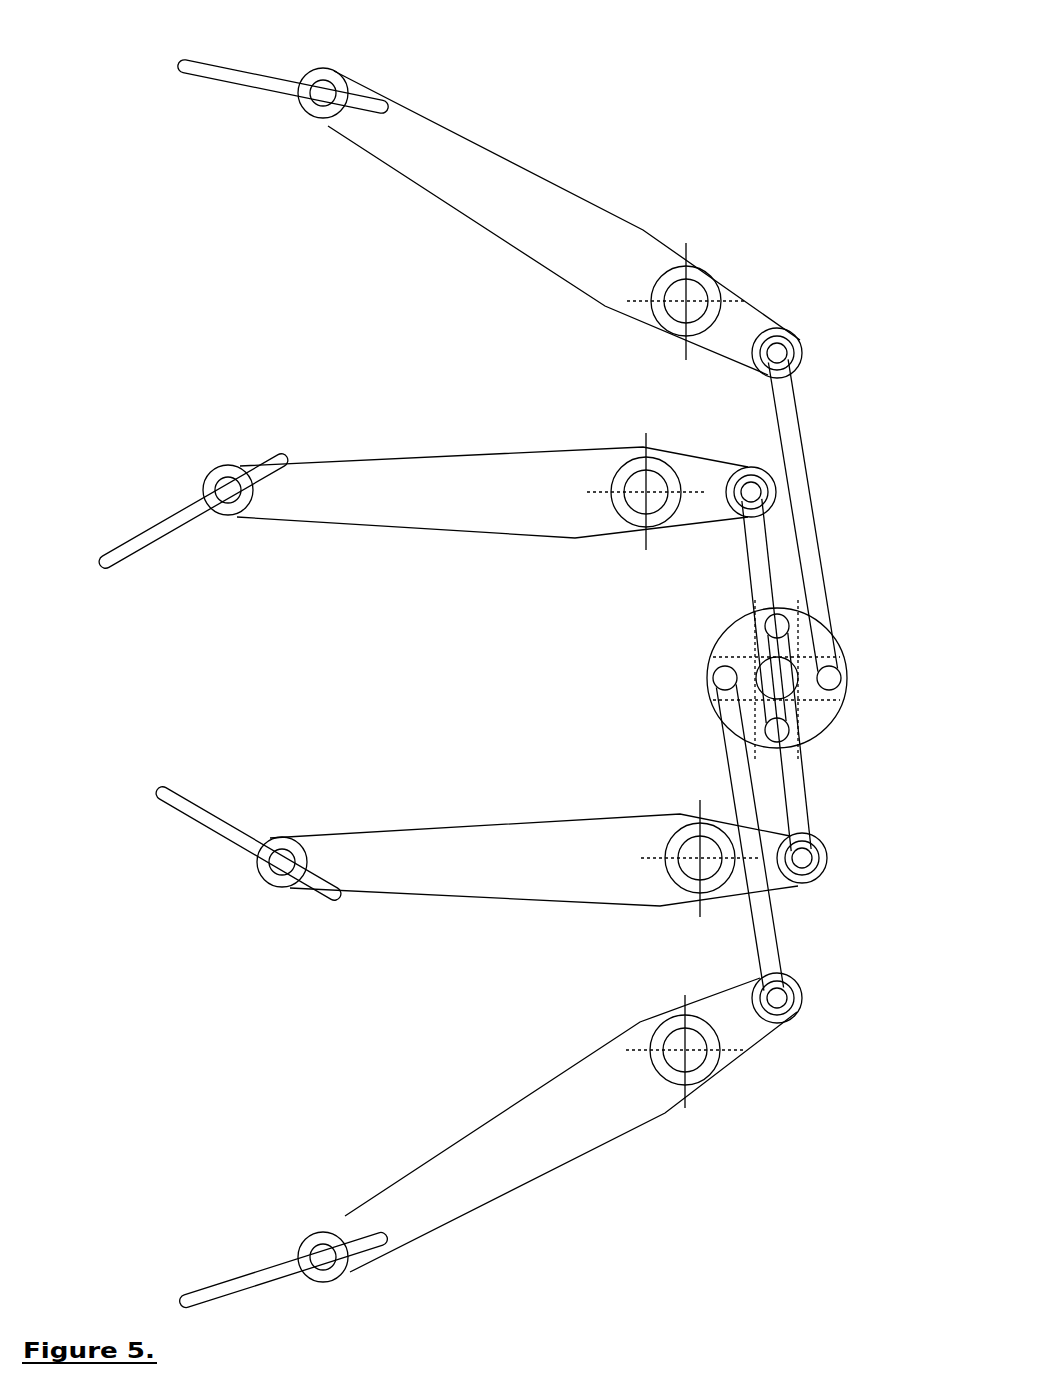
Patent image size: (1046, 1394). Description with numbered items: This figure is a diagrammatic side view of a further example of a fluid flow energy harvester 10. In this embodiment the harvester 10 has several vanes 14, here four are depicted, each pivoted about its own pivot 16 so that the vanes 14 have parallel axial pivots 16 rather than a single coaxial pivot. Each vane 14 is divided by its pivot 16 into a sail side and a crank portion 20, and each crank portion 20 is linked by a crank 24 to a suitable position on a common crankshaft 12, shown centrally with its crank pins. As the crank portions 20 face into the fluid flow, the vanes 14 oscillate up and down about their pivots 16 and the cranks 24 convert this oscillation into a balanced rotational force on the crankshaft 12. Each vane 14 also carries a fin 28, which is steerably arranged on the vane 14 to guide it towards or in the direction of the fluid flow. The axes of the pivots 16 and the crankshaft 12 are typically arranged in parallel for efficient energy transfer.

The fluid flow energy harvester 10 is at (840, 145).
The crankshaft 12 is at (820, 712).
The vane 14 is at (448, 172).
The pivot 16 is at (697, 855).
The crank portion 20 is at (810, 920).
The crank 24 is at (767, 555).
The fin 28 is at (182, 524).